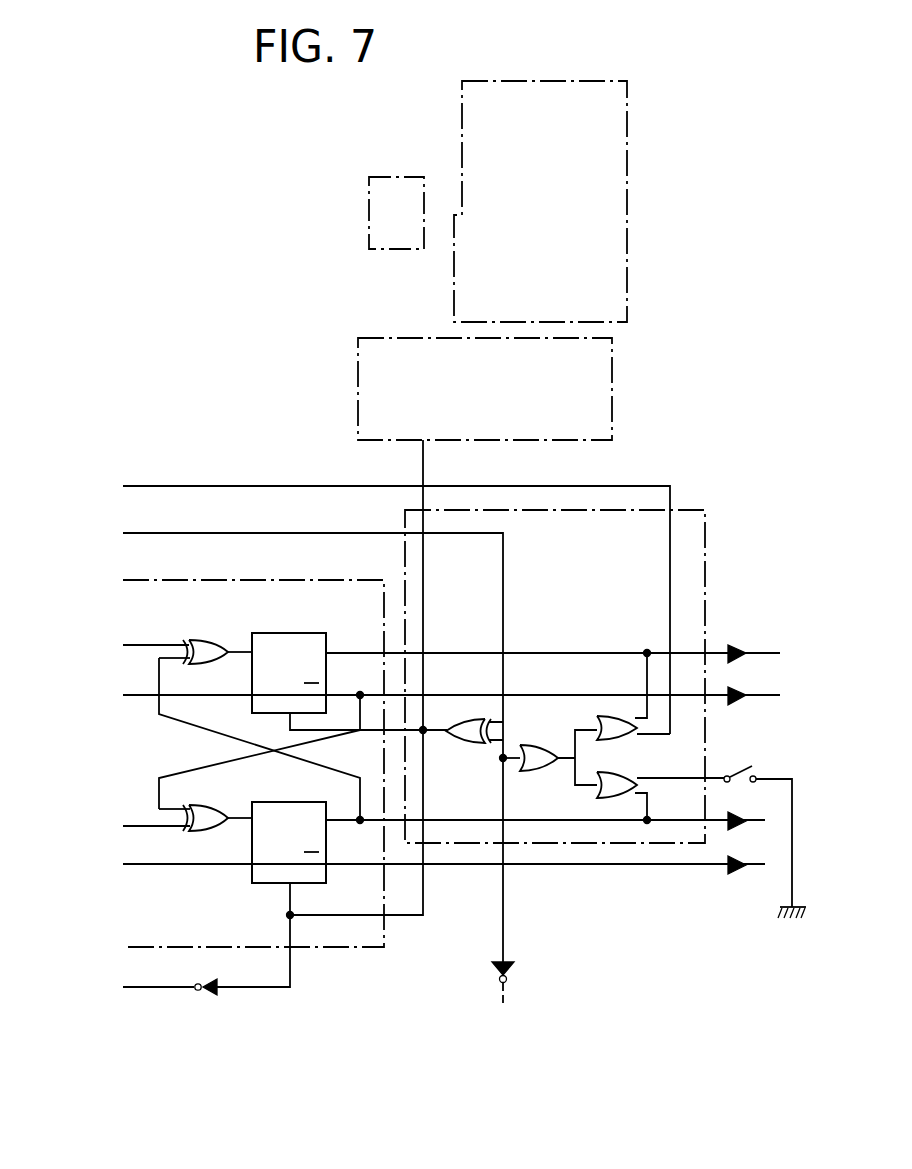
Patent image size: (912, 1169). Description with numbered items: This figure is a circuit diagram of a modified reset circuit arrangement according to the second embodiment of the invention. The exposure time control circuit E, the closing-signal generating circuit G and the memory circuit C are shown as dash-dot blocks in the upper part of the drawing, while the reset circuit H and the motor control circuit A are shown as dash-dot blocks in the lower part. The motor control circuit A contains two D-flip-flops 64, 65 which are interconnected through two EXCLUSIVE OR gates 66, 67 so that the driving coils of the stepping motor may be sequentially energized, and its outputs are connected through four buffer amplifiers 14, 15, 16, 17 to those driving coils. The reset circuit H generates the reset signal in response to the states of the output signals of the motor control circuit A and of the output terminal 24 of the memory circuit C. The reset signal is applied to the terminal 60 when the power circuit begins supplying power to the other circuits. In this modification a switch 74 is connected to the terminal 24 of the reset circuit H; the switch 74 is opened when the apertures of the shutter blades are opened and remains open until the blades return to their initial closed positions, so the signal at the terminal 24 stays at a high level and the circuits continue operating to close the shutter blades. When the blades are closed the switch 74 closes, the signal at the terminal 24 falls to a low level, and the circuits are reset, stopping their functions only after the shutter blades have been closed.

The exposure time control circuit E is at (462, 120).
The closing-signal generating circuit G is at (369, 212).
The memory circuit C is at (358, 382).
The reset circuit H is at (705, 520).
The motor control circuit A is at (338, 917).
The terminal 60 is at (142, 532).
The D-flip-flop 64 is at (290, 633).
The D-flip-flop 65 is at (252, 875).
The EXCLUSIVE OR gate 66 is at (210, 638).
The EXCLUSIVE OR gate 67 is at (190, 834).
The terminal 24 is at (652, 778).
The buffer amplifier 14 is at (735, 645).
The buffer amplifier 15 is at (738, 688).
The buffer amplifier 16 is at (738, 813).
The buffer amplifier 17 is at (738, 858).
The switch 74 is at (748, 773).